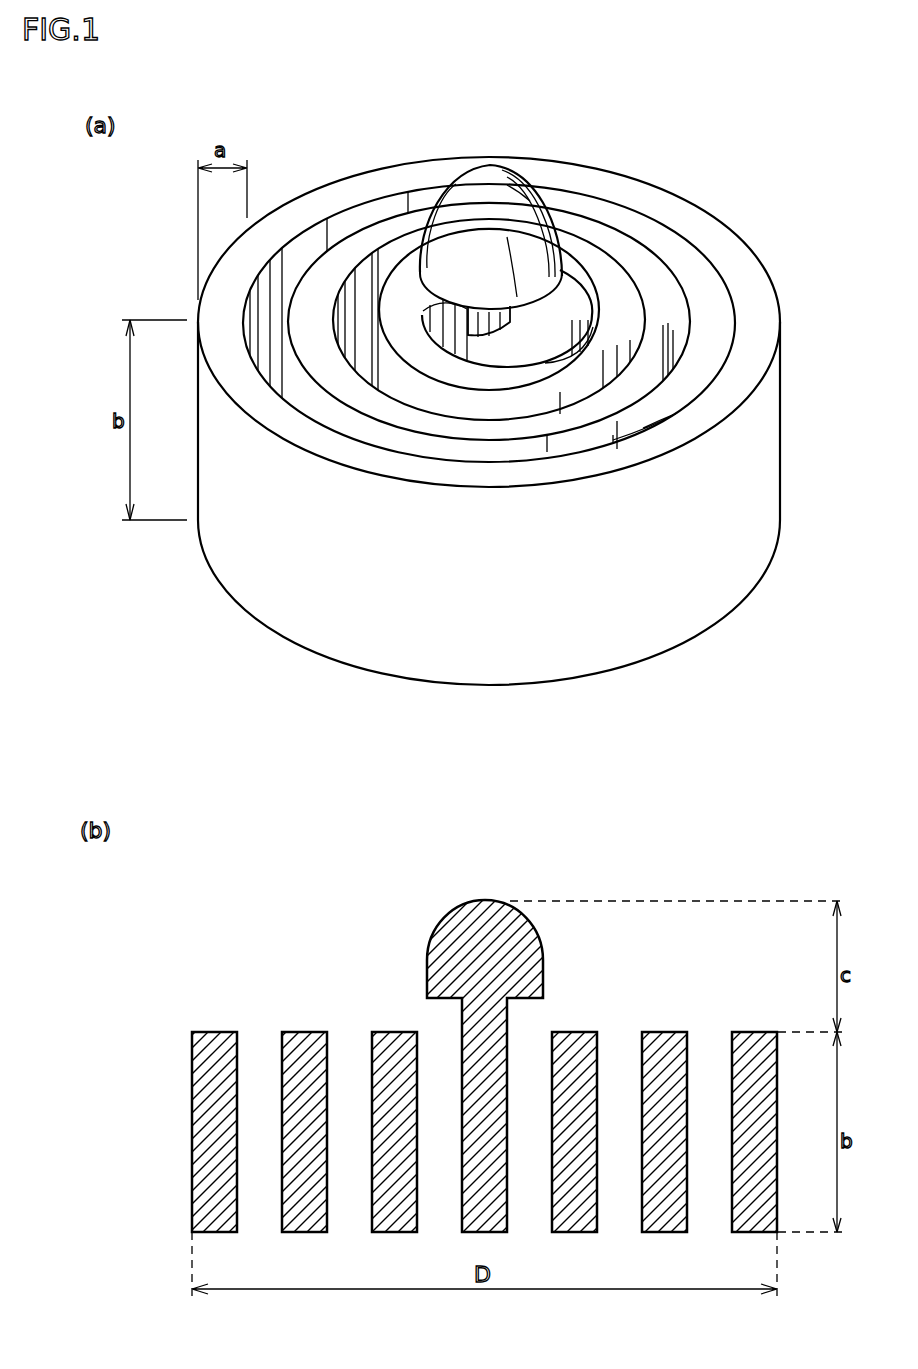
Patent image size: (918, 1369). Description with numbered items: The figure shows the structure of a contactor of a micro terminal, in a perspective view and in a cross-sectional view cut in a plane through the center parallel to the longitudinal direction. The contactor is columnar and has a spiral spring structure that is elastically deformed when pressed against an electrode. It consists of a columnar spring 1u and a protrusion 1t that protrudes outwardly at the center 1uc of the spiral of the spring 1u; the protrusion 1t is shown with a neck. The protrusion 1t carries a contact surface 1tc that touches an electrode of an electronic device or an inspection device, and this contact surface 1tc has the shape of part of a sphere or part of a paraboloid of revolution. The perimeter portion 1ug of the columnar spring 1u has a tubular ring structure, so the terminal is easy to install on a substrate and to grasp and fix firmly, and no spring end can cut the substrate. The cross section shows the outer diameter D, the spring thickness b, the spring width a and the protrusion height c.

The protrusion 1t is at (550, 196).
The columnar spring 1u is at (630, 265).
The perimeter portion 1ug is at (742, 305).
The center of spiral 1uc is at (470, 339).
The contact surface 1tc is at (485, 896).